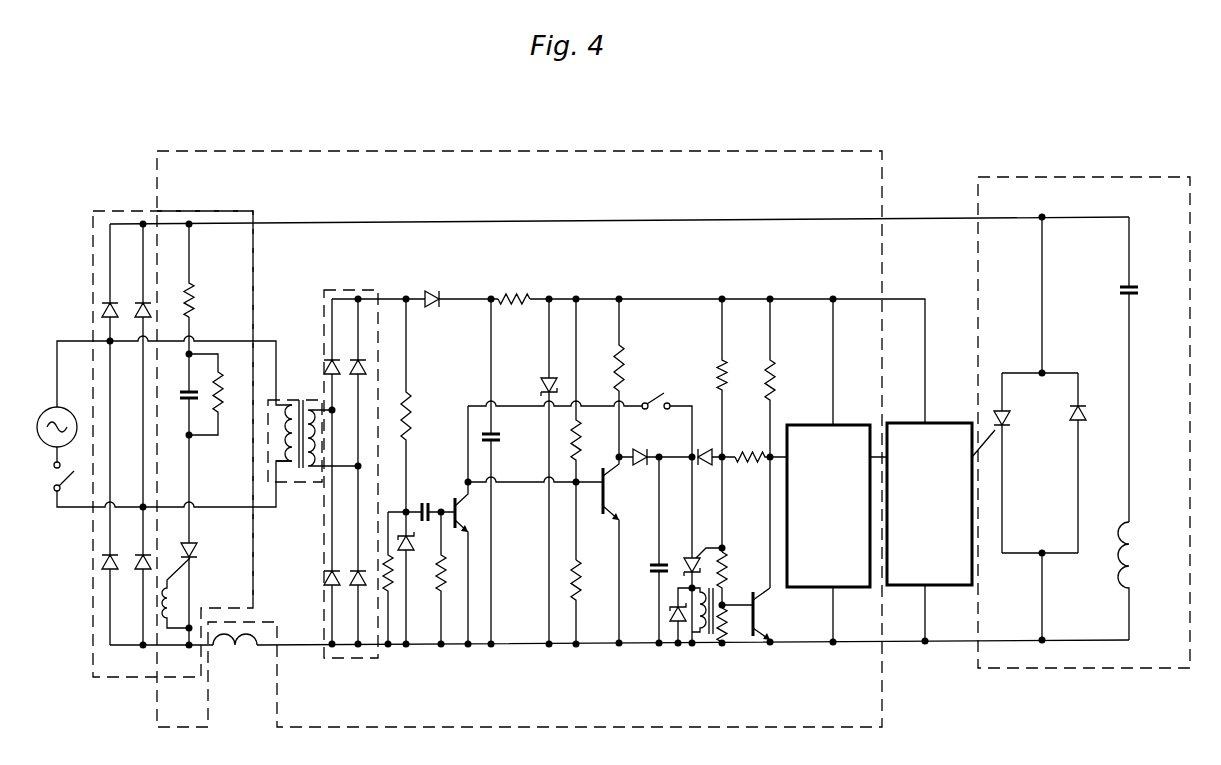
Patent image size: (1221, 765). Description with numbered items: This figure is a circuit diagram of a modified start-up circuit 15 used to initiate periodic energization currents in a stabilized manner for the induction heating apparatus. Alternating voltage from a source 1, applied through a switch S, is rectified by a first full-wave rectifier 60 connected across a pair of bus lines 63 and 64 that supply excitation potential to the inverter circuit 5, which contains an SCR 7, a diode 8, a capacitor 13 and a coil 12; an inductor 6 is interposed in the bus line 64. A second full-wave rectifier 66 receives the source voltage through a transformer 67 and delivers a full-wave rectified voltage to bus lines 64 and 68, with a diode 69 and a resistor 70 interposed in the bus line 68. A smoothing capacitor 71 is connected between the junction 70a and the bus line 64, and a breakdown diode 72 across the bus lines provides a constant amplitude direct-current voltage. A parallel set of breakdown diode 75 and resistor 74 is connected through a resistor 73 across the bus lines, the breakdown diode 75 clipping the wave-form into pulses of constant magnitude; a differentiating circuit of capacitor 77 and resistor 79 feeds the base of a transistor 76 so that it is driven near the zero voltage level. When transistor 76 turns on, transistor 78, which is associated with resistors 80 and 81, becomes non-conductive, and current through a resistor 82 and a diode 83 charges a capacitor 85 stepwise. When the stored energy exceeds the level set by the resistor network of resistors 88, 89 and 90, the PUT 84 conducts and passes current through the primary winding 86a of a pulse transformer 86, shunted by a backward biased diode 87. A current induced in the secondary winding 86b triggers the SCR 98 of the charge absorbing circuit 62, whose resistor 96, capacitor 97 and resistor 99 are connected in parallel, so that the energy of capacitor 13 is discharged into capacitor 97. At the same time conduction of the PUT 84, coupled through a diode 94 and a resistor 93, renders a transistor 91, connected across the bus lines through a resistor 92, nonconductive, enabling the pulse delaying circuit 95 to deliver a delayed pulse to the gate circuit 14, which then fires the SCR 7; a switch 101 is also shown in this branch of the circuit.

The source 1 is at (53, 412).
The power switch S is at (53, 478).
The inverter circuit 5 is at (1068, 177).
The inductor 6 is at (238, 650).
The SCR 7 is at (1010, 418).
The diode 8 is at (1084, 413).
The load coil 12 is at (1138, 550).
The capacitor 13 is at (1138, 290).
The gate circuit 14 is at (940, 423).
The start-up circuit 15 is at (541, 151).
The first full-wave rectifier 60 is at (100, 211).
The charge absorbing circuit 62 is at (198, 211).
The bus line 63 is at (588, 222).
The bus line 64 is at (432, 645).
The second full-wave rectifier 66 is at (345, 290).
The transformer 67 is at (290, 400).
The bus line 68 is at (406, 299).
The diode 69 is at (440, 294).
The resistor 70 is at (520, 295).
The junction 70a is at (488, 304).
The smoothing capacitor 71 is at (502, 440).
The breakdown diode 72 is at (545, 380).
The resistor 73 is at (412, 410).
The resistor 74 is at (392, 598).
The breakdown diode 75 is at (412, 543).
The transistor 76 is at (470, 514).
The capacitor 77 is at (427, 502).
The transistor 78 is at (602, 508).
The resistor 79 is at (446, 575).
The resistor 80 is at (580, 610).
The resistor 81 is at (580, 440).
The resistor 82 is at (625, 360).
The diode 83 is at (645, 452).
The PUT 84 is at (692, 556).
The capacitor 85 is at (655, 560).
The pulse transformer 86 is at (712, 640).
The primary winding 86a is at (700, 634).
The secondary winding 86b is at (170, 600).
The diode 87 is at (676, 630).
The resistor 88 is at (726, 370).
The resistor 89 is at (726, 562).
The resistor 90 is at (726, 628).
The transistor 91 is at (762, 612).
The resistor 92 is at (774, 372).
The resistor 93 is at (748, 452).
The diode 94 is at (705, 450).
The pulse delaying circuit 95 is at (840, 425).
The resistor 96 is at (196, 300).
The capacitor 97 is at (184, 404).
The SCR 98 is at (196, 552).
The resistor 99 is at (224, 385).
The switch 101 is at (660, 396).